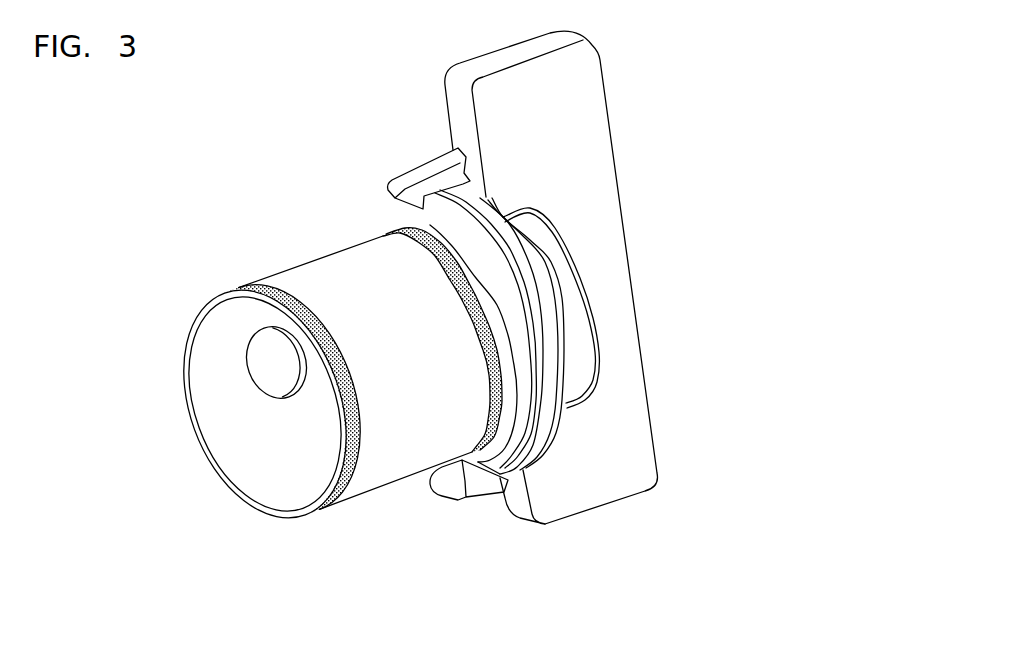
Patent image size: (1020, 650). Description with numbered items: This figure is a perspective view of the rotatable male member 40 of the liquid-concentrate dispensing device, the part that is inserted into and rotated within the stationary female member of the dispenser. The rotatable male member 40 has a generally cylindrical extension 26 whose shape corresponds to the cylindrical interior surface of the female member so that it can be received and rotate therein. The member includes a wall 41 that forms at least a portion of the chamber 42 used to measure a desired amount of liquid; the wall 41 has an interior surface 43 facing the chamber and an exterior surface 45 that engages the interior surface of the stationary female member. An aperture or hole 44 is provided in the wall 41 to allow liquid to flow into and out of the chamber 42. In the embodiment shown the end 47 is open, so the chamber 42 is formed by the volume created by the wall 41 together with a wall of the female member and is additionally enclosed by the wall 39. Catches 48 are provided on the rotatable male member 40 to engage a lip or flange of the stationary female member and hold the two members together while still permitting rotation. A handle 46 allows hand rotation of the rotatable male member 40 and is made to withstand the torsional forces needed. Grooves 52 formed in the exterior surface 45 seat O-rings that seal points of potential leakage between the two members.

The extension 26 is at (337, 270).
The wall 39 is at (542, 402).
The rotatable male member 40 is at (290, 141).
The wall 41 is at (370, 467).
The chamber 42 is at (176, 468).
The interior surface 43 is at (243, 457).
The aperture 44 is at (250, 372).
The exterior surface 45 is at (290, 285).
The handle 46 is at (613, 288).
The end 47 is at (253, 502).
The catches 48 is at (406, 175).
The grooves 52 is at (337, 500).